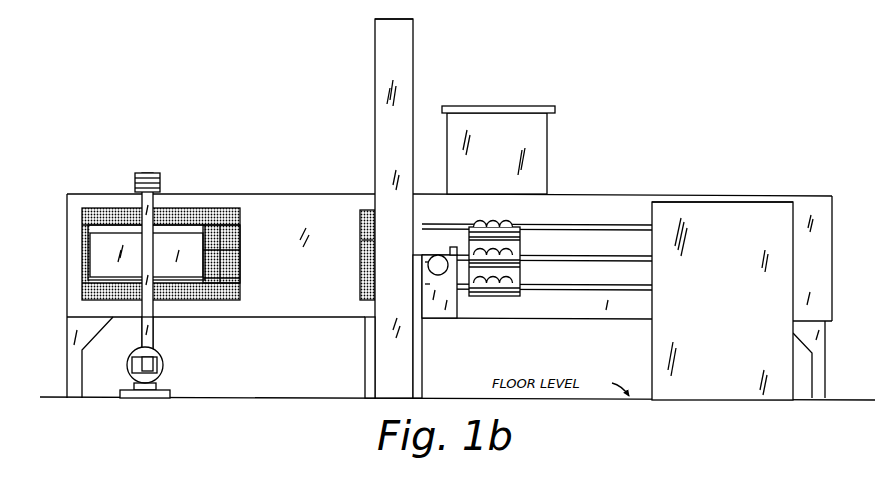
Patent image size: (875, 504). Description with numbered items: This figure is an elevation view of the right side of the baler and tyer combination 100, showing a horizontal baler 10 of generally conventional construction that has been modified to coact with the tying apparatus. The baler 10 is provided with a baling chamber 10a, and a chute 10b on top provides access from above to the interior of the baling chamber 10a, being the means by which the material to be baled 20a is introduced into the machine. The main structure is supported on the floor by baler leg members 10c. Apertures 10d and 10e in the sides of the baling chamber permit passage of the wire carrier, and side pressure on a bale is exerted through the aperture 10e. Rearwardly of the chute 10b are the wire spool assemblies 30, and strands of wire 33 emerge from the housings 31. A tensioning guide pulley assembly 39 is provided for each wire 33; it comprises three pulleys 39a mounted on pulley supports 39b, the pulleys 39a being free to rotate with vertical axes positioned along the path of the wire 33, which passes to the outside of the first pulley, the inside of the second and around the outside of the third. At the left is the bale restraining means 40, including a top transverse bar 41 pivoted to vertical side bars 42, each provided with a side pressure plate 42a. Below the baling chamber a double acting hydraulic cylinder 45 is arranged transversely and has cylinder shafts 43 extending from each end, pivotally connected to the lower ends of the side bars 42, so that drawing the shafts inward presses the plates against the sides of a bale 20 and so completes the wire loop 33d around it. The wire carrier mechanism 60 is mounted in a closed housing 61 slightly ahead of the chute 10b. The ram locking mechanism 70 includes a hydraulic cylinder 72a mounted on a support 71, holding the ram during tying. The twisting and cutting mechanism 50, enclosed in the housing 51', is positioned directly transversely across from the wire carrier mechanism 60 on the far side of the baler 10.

The baler and tyer combination 100 is at (785, 140).
The horizontal baler 10 is at (304, 190).
The baling chamber 10a is at (291, 193).
The chute 10b is at (510, 122).
The baler leg members 10c is at (68, 368).
The aperture 10d is at (360, 222).
The aperture 10e is at (113, 212).
The bale 20 is at (195, 304).
The material to be baled 20a is at (234, 210).
The wire spool assemblies 30 is at (706, 0).
The housings 31 is at (717, 208).
The wire 33 is at (240, 218).
The wire loop 33d is at (83, 215).
The tensioning guide pulley assembly 39 is at (512, 303).
The pulleys 39a is at (505, 222).
The pulley supports 39b is at (520, 295).
The bale restraining means 40 is at (137, 172).
The top transverse bar 41 is at (157, 178).
The vertical side bars 42 is at (142, 330).
The side pressure plate 42a is at (100, 262).
The cylinder shafts 43 is at (132, 368).
The hydraulic cylinder 45 is at (163, 365).
The twisting and cutting mechanism 50 is at (385, 13).
The housing 51' is at (366, 208).
The wire carrier mechanism 60 is at (362, 352).
The closed housing 61 is at (424, 377).
The ram locking mechanism 70 is at (439, 251).
The support 71 is at (443, 318).
The hydraulic cylinder 72a is at (422, 273).